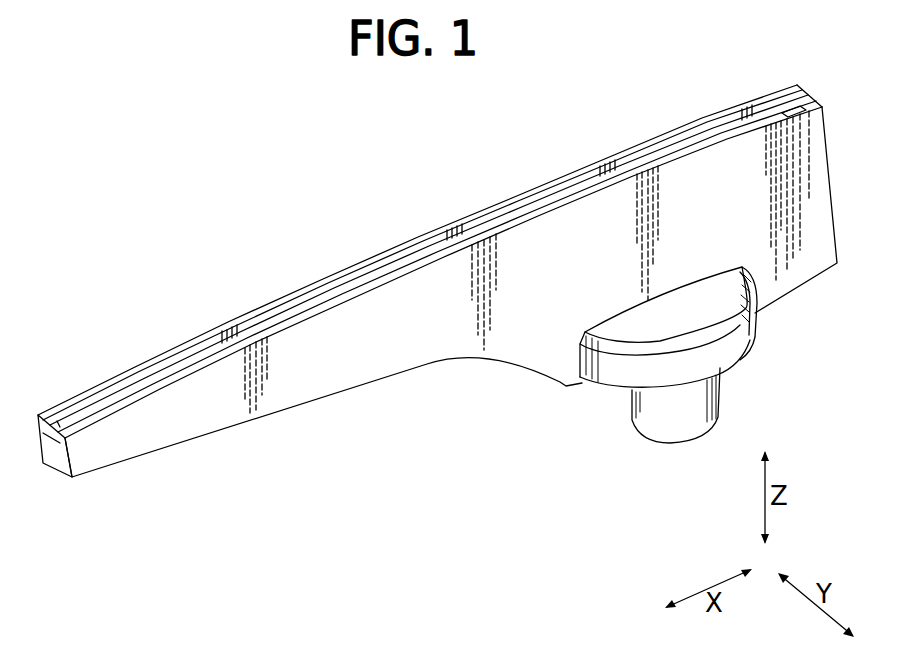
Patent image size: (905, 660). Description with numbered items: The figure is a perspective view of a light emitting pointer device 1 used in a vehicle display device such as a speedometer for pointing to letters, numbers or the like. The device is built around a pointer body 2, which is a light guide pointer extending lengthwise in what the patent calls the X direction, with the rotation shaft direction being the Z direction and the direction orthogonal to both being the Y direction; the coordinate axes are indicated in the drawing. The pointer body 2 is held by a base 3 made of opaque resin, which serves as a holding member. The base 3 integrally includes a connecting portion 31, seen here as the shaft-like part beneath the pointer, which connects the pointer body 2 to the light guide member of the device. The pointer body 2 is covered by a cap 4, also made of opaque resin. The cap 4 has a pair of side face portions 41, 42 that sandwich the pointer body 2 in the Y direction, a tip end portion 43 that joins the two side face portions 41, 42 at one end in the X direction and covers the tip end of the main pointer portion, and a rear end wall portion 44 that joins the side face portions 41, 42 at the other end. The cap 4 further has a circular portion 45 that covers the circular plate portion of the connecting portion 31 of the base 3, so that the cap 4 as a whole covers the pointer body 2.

The light emitting pointer device 1 is at (404, 151).
The pointer body 2 is at (631, 153).
The base 3 is at (720, 380).
The connecting portion 31 is at (720, 412).
The cap 4 is at (820, 130).
The side face portion 41 is at (420, 347).
The side face portion 42 is at (537, 187).
The tip end portion 43 is at (46, 470).
The rear end wall portion 44 is at (805, 102).
The circular portion 45 is at (755, 313).